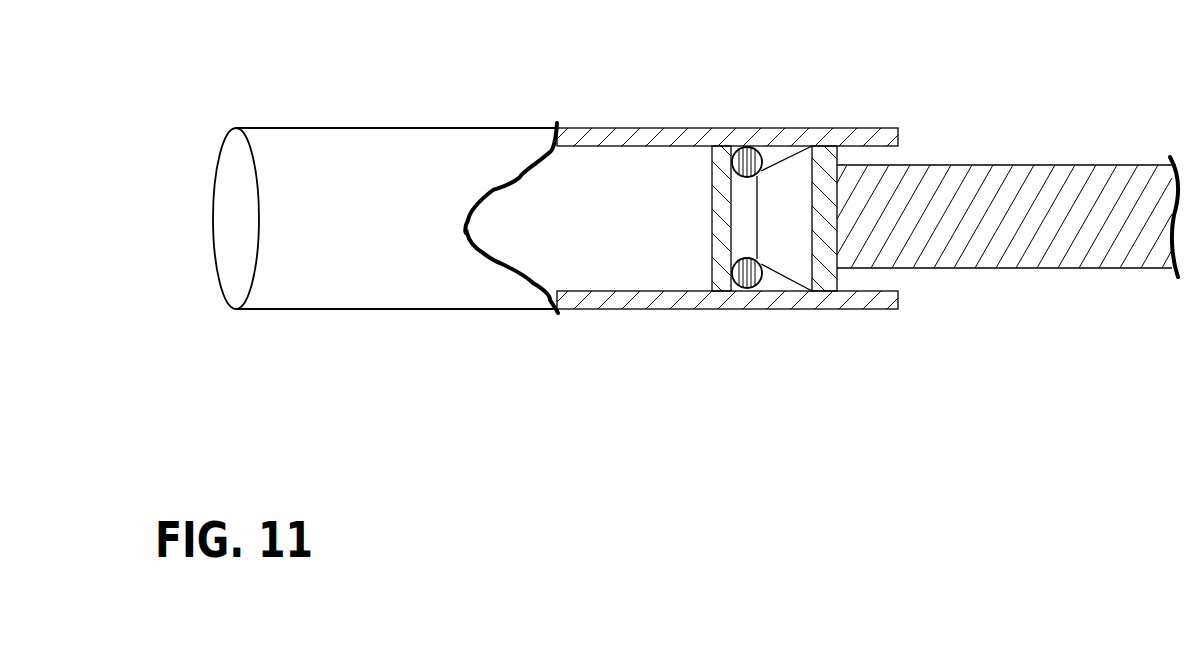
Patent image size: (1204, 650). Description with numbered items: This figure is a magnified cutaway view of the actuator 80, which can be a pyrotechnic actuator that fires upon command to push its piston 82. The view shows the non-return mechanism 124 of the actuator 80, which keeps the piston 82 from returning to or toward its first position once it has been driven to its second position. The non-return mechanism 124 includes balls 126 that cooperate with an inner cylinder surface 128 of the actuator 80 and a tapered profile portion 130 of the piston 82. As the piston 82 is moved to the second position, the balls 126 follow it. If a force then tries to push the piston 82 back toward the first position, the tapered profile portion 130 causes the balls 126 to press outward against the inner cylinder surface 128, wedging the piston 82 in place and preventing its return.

The actuator 80 is at (365, 173).
The piston 82 is at (1032, 190).
The non-return mechanism 124 is at (779, 279).
The balls 126 is at (760, 152).
The inner cylinder surface 128 is at (655, 291).
The tapered profile portion 130 is at (780, 163).